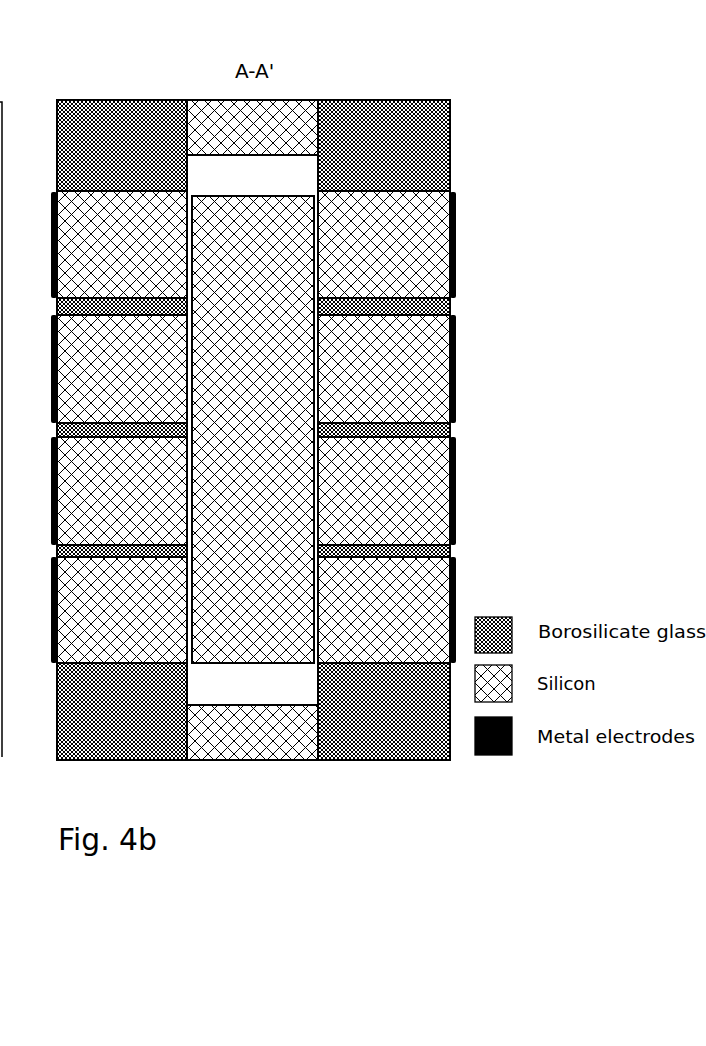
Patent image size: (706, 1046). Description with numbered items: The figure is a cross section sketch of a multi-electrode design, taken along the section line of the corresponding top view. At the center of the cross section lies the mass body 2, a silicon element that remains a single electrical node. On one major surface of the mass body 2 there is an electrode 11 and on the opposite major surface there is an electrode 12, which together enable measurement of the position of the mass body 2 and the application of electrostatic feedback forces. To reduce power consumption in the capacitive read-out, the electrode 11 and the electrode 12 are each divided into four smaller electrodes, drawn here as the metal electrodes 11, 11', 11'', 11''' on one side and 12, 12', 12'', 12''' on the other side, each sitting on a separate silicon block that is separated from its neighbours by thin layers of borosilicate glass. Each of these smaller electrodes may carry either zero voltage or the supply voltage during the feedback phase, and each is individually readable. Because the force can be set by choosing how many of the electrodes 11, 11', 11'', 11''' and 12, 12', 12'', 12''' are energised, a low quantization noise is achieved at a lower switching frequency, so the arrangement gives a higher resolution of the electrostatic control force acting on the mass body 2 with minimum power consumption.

The mass body 2 is at (263, 393).
The electrode 11 is at (493, 610).
The electrode 11' is at (499, 491).
The electrode 11'' is at (498, 369).
The electrode 11''' is at (501, 245).
The electrode 12 is at (32, 610).
The electrode 12' is at (32, 491).
The electrode 12'' is at (32, 369).
The electrode 12''' is at (31, 179).